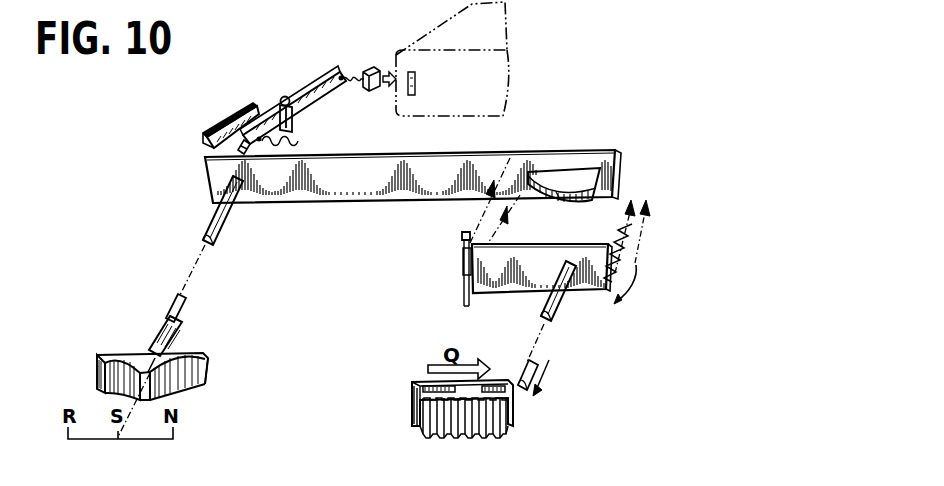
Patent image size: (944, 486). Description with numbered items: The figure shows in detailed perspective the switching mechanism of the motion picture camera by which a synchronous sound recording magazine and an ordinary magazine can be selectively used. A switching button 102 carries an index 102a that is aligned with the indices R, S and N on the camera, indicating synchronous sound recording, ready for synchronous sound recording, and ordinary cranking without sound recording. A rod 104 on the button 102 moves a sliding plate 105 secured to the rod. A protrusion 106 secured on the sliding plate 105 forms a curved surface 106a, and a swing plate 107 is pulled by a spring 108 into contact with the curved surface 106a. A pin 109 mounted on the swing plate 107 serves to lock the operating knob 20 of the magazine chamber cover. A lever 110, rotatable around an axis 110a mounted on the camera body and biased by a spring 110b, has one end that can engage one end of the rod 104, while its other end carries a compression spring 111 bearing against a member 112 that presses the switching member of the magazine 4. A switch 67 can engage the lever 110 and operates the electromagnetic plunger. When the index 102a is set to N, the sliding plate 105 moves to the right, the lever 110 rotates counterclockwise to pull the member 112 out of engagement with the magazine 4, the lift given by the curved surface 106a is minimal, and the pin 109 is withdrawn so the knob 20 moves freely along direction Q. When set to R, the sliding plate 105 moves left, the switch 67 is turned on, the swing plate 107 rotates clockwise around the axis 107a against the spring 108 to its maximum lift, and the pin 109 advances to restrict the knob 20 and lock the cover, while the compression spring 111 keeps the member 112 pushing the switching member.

The magazine 4 is at (487, 64).
The operating knob 20 is at (468, 434).
The switch 67 is at (246, 108).
The switching button 102 is at (190, 370).
The index 102a is at (147, 366).
The rod 104 is at (215, 226).
The sliding plate 105 is at (305, 190).
The protrusion 106 is at (578, 174).
The curved surface 106a is at (558, 194).
The swing plate 107 is at (494, 284).
The axis 107a is at (464, 274).
The spring 108 is at (631, 226).
The pin 109 is at (570, 300).
The lever 110 is at (317, 78).
The axis 110a is at (281, 118).
The spring 110b is at (296, 138).
The compression spring 111 is at (348, 74).
The member 112 is at (375, 90).